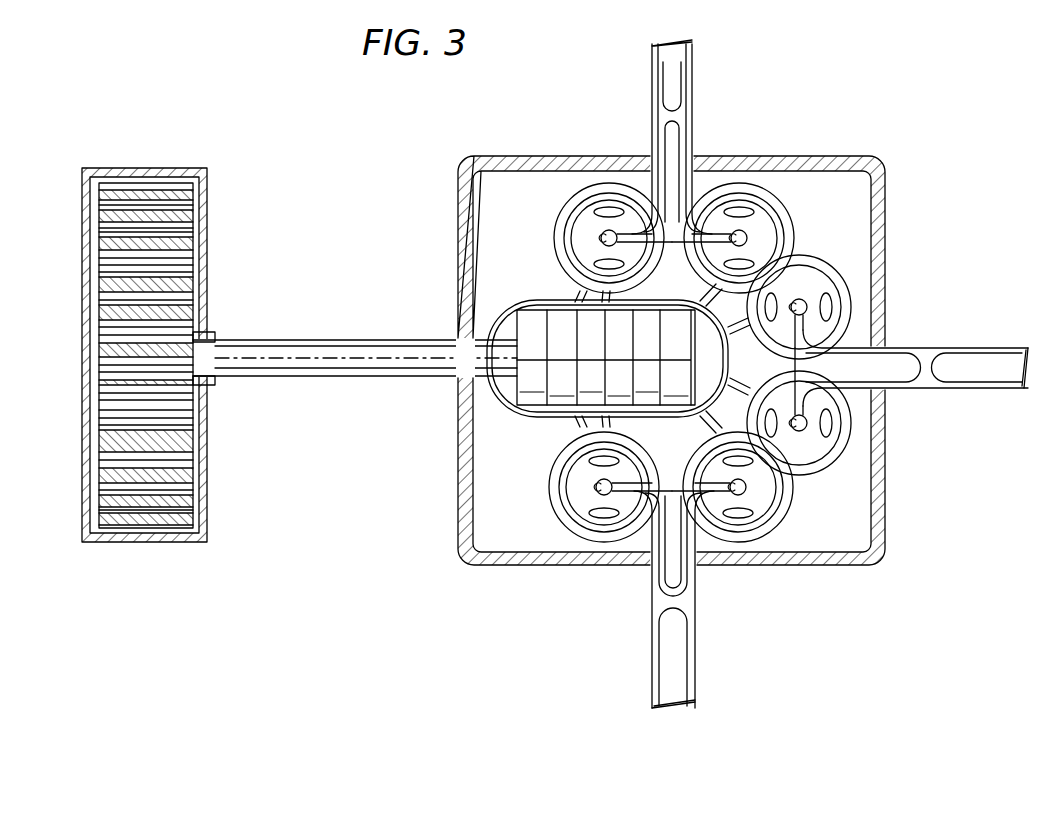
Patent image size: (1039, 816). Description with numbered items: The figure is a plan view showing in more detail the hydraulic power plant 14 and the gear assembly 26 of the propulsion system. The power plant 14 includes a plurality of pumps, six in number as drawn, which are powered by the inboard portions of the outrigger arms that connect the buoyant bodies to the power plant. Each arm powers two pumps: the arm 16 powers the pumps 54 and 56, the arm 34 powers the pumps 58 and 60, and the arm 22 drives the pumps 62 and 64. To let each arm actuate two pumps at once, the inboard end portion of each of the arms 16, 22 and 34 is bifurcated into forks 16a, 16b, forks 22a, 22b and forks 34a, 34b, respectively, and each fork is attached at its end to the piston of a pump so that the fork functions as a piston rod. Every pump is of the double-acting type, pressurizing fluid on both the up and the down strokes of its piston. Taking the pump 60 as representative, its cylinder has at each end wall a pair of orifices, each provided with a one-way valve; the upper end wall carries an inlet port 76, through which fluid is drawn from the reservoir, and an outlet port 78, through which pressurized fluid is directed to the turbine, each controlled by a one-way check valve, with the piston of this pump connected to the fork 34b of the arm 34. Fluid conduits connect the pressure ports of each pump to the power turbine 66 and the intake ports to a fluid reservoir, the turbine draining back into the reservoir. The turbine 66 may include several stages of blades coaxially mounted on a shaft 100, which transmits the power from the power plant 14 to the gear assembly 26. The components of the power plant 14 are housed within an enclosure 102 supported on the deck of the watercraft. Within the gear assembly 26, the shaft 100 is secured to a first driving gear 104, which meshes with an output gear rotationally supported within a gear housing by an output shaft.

The hydraulic power plant 14 is at (699, 374).
The outrigger arm 16 is at (667, 141).
The fork 16a is at (631, 232).
The fork 16b is at (716, 232).
The outrigger arm 22 is at (674, 595).
The fork 22a is at (718, 495).
The fork 22b is at (623, 495).
The gear assembly 26 is at (250, 172).
The outrigger arm 34 is at (911, 372).
The fork 34a is at (803, 333).
The fork 34b is at (806, 407).
The pump 54 is at (557, 228).
The pump 56 is at (782, 207).
The pump 58 is at (851, 232).
The hydraulic pump 60 is at (836, 455).
The pump 62 is at (775, 514).
The pump 64 is at (553, 503).
The power turbine 66 is at (523, 276).
The inlet port 76 is at (830, 432).
The outlet port 78 is at (800, 432).
The shaft 100 is at (328, 358).
The enclosure 102 is at (458, 510).
The first driving gear 104 is at (180, 443).